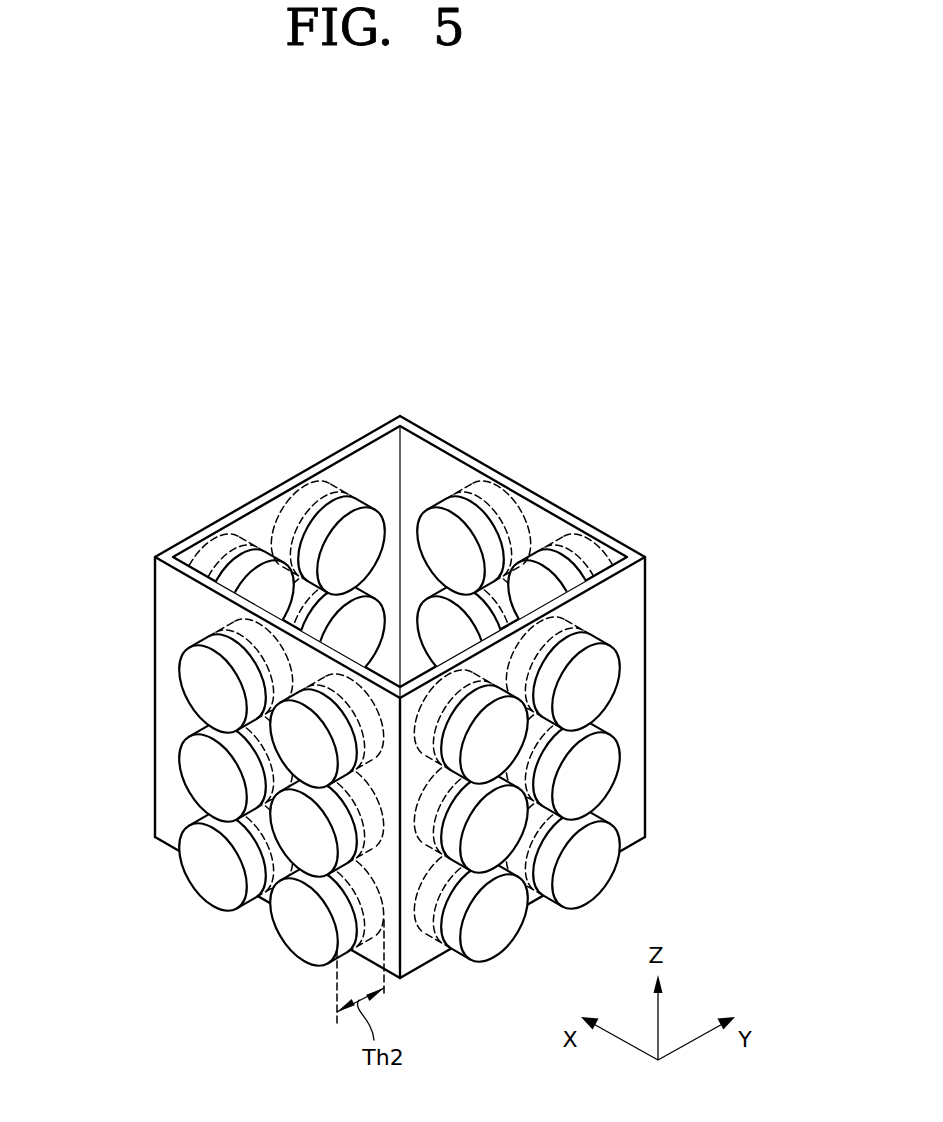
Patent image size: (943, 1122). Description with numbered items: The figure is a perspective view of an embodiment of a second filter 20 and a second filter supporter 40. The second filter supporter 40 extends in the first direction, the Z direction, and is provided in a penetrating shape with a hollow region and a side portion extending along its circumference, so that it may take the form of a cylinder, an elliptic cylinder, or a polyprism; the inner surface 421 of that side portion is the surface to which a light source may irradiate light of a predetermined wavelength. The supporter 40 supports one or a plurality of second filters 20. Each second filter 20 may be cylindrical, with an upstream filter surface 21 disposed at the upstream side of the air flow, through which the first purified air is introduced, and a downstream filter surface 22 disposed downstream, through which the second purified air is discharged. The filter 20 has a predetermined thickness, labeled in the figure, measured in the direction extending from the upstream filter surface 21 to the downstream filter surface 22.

The second filter 20 is at (607, 673).
The (2-1)th filter surface 21 is at (202, 679).
The (2-2)th filter surface 22 is at (437, 528).
The second filter supporter 40 is at (448, 442).
The inner surface 421 is at (540, 528).